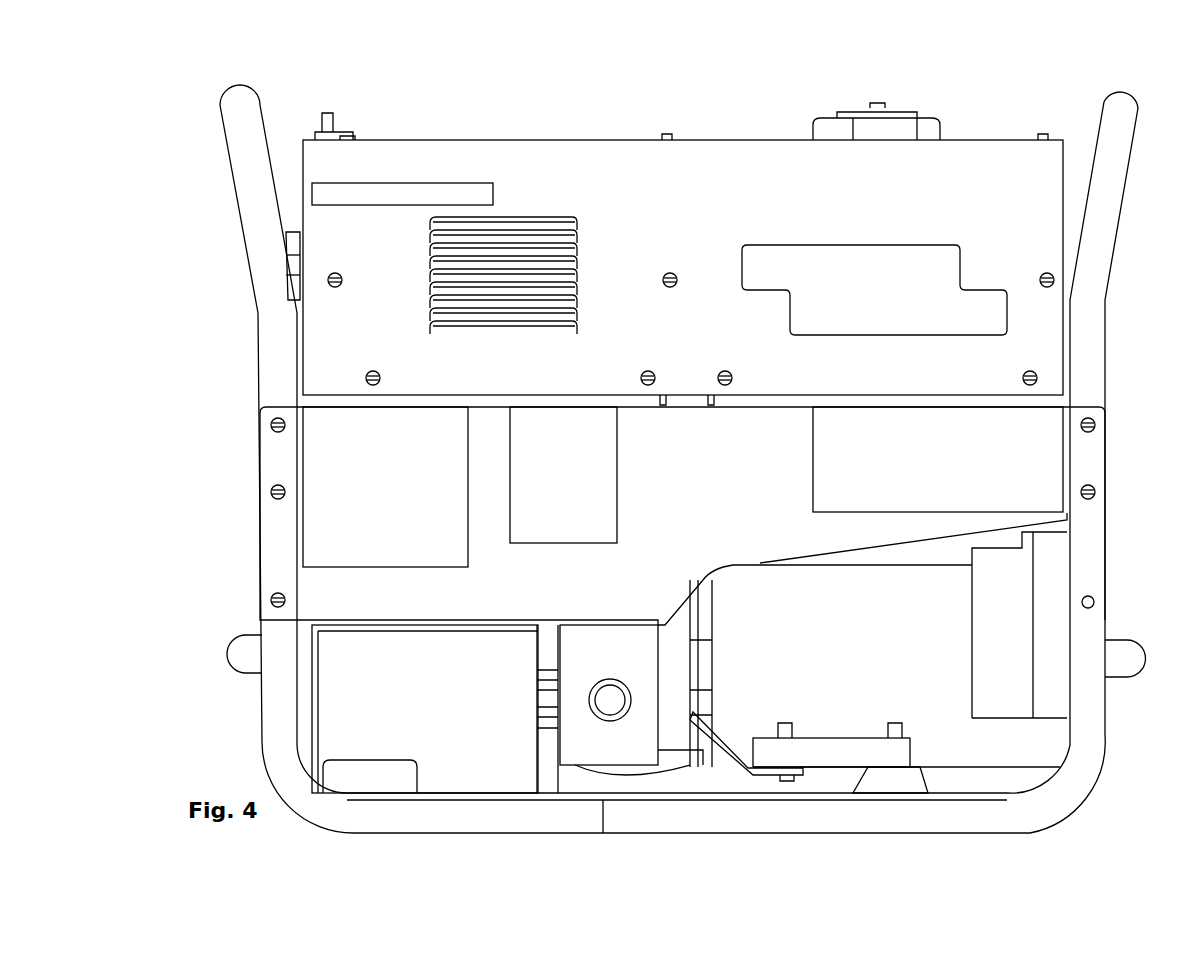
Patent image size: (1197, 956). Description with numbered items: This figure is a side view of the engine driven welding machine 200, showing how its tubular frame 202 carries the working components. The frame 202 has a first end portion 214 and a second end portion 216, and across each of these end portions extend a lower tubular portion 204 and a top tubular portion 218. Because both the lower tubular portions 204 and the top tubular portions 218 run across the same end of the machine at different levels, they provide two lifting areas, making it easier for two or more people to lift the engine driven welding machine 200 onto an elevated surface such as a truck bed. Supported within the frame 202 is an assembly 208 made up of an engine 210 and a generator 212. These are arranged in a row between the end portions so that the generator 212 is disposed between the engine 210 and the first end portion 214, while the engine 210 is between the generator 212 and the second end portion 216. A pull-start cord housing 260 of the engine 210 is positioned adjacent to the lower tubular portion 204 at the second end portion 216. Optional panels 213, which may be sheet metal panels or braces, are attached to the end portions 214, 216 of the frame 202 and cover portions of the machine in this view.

The engine driven welding machine 200 is at (694, 445).
The frame 202 is at (272, 128).
The lower tubular portion 204 is at (1118, 648).
The assembly 208 is at (602, 168).
The engine 210 is at (935, 607).
The generator 212 is at (372, 680).
The panels 213 is at (1048, 450).
The first end portion 214 is at (244, 216).
The second end portion 216 is at (1118, 215).
The top tubular portion 218 is at (240, 88).
The pull-start cord housing 260 is at (1035, 718).